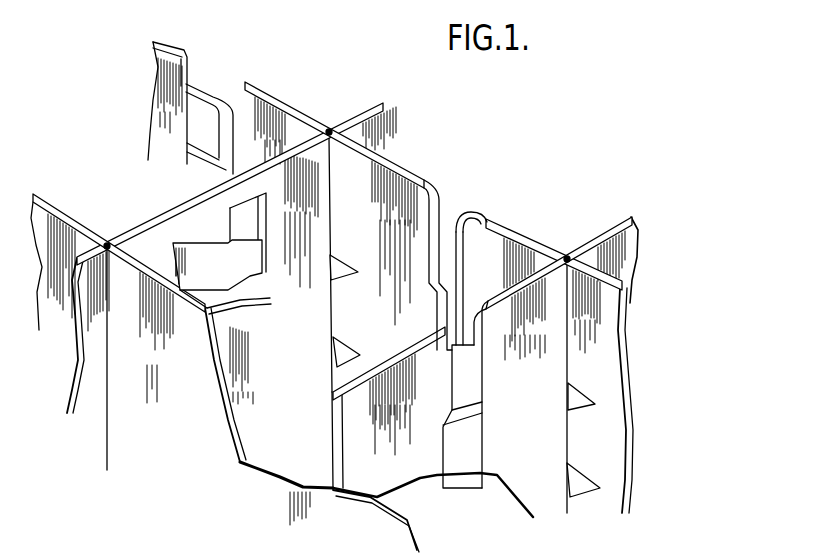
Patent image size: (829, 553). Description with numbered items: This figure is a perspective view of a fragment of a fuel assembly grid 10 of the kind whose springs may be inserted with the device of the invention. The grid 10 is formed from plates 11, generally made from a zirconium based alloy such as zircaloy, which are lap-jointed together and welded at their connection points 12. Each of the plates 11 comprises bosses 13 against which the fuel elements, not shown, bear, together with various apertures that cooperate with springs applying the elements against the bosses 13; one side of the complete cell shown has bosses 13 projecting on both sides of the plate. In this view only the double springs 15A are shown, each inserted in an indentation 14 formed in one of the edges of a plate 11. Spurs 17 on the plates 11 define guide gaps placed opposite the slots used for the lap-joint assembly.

The grid 10 is at (326, 108).
The plates 11 is at (357, 127).
The connection points 12 is at (107, 243).
The bosses 13 is at (207, 297).
The indentations 14 is at (477, 237).
The double springs 15A is at (443, 245).
The spurs 17 is at (346, 344).